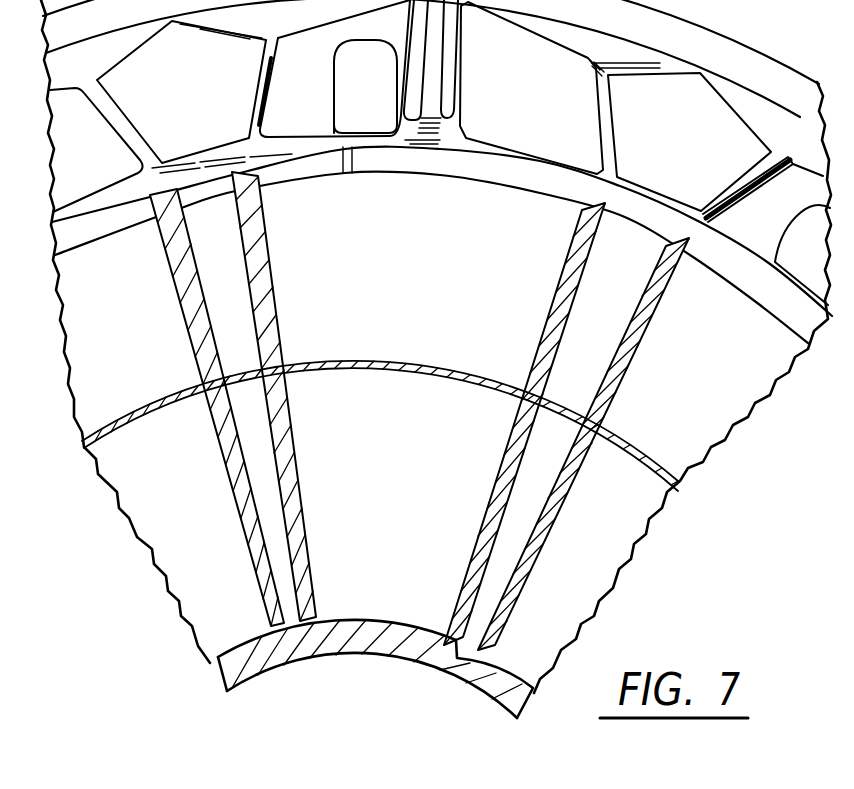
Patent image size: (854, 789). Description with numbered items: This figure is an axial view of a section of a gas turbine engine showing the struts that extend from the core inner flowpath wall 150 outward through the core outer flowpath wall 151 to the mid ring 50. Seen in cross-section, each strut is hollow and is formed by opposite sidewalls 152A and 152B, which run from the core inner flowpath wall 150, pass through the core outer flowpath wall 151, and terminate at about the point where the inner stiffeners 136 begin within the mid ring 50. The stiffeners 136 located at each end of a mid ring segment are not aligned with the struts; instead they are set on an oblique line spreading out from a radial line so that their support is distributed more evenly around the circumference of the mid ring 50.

The mid ring 50 is at (521, 101).
The inner stiffeners 136 is at (738, 180).
The core inner flowpath wall 150 is at (358, 620).
The core outer flowpath wall 151 is at (372, 368).
The sidewall 152A is at (193, 332).
The sidewall 152B is at (273, 283).